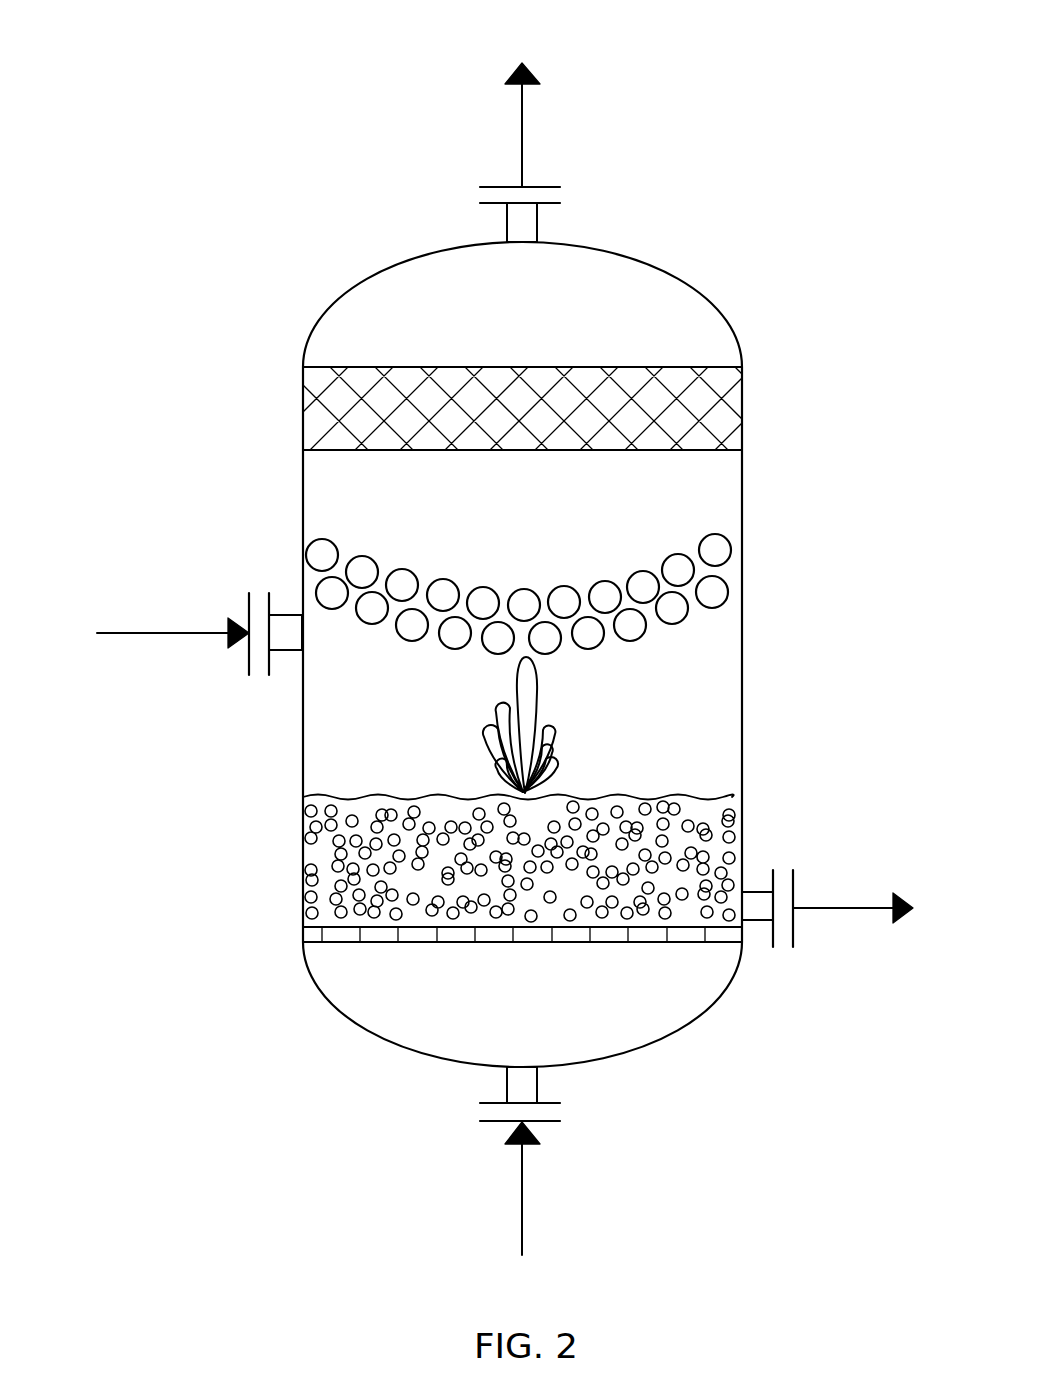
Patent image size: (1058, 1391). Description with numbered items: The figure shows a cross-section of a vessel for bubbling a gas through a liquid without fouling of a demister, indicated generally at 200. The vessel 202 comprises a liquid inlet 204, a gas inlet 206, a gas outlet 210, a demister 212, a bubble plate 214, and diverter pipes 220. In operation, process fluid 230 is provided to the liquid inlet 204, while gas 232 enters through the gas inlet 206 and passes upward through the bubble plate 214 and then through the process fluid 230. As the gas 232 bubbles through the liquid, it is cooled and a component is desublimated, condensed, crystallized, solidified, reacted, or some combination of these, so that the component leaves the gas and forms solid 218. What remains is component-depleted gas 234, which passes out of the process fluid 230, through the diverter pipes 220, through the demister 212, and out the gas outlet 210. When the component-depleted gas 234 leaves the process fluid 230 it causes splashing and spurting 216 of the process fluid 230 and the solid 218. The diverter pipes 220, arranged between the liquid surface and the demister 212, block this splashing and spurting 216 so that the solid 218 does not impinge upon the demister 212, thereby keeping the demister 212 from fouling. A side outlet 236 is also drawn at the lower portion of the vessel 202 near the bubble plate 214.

The vessel cross-section 200 is at (150, 56).
The vessel 202 is at (346, 292).
The liquid inlet 204 is at (287, 650).
The gas inlet 206 is at (540, 1085).
The gas outlet 210 is at (540, 222).
The demister 212 is at (300, 407).
The bubble plate 214 is at (302, 932).
The splashing and spurting 216 is at (540, 689).
The solid 218 is at (735, 830).
The diverter pipes 220 is at (728, 586).
The process fluid 230 is at (302, 834).
The gas 232 is at (523, 1210).
The component-depleted gas 234 is at (519, 105).
The side outlet stream 236 is at (755, 920).